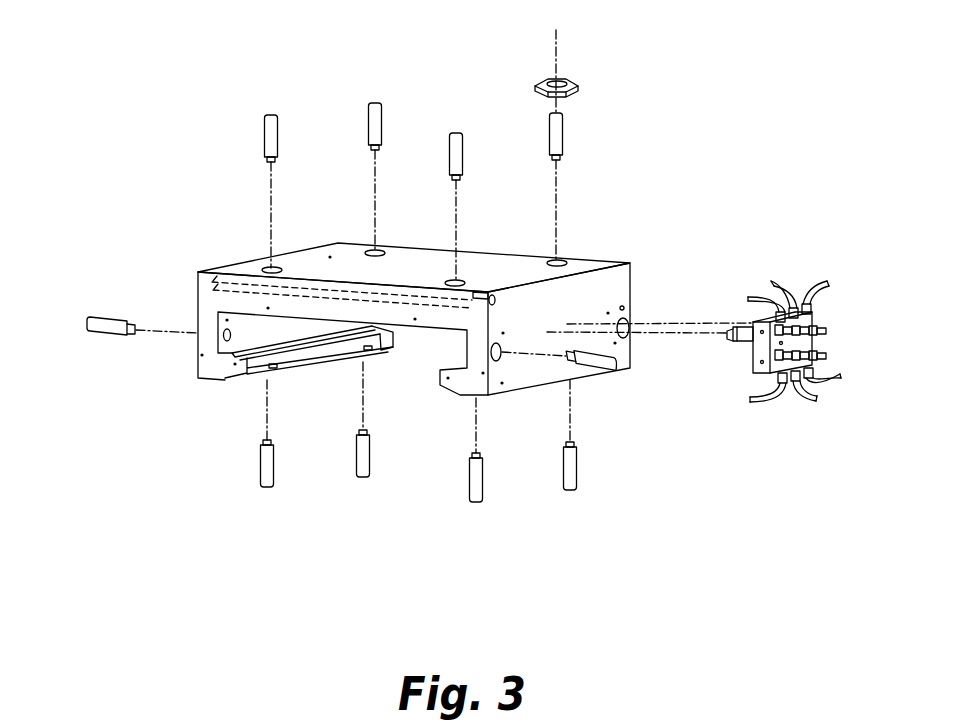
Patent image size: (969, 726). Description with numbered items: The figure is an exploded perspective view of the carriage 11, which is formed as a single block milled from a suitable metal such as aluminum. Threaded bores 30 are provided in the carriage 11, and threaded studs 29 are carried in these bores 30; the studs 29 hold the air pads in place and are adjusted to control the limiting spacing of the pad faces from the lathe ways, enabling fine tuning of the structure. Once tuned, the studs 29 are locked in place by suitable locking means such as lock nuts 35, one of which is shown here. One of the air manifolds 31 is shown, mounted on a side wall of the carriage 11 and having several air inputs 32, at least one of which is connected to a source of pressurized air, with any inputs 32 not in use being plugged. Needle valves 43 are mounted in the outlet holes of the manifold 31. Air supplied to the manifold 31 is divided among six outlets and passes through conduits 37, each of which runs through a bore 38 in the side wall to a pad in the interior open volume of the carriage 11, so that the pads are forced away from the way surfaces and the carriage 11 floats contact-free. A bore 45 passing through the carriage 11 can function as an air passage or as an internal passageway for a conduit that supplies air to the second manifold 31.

The carriage 11 is at (198, 270).
The threaded studs 29 is at (278, 142).
The threaded bores 30 is at (366, 252).
The air manifold 31 is at (758, 350).
The air inputs 32 is at (762, 322).
The lock nuts 35 is at (567, 77).
The conduits 37 is at (773, 282).
The bores 38 is at (503, 365).
The needle valves 43 is at (828, 353).
The bore 45 is at (253, 292).